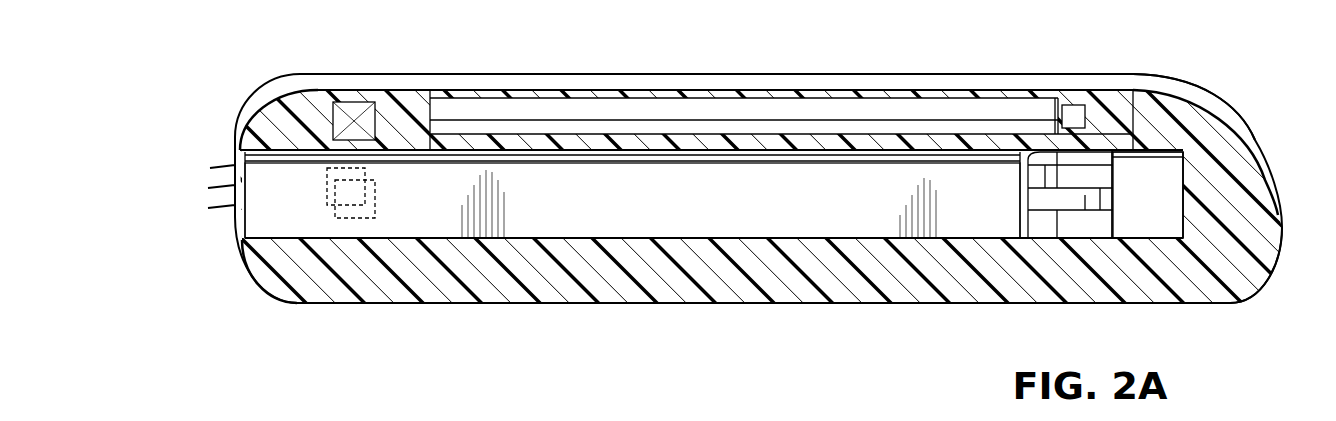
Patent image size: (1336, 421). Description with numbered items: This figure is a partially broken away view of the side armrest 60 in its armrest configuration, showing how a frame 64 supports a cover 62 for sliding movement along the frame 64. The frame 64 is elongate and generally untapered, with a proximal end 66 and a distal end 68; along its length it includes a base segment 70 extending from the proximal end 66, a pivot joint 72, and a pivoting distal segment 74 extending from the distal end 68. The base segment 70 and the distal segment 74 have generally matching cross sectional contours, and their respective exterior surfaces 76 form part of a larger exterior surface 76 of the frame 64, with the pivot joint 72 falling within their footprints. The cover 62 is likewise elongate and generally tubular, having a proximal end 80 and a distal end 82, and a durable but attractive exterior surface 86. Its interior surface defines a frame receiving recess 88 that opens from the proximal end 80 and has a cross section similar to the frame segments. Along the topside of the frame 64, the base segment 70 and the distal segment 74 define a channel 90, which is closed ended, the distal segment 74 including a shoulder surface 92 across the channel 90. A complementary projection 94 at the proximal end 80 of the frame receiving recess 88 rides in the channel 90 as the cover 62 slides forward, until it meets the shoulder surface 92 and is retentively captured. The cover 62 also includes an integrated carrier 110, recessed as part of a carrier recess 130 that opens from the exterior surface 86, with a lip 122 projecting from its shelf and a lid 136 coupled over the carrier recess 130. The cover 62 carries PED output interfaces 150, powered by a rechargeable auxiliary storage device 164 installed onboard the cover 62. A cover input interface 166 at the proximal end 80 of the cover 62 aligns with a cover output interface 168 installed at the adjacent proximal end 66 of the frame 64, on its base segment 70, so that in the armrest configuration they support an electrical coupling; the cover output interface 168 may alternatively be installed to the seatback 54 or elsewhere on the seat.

The seatback 54 is at (223, 160).
The side armrest 60 is at (1216, 100).
The cover 62 is at (1250, 140).
The frame 64 is at (632, 240).
The proximal end 66 is at (240, 228).
The distal end 68 is at (1192, 212).
The base segment 70 is at (787, 230).
The pivot joint 72 is at (1057, 205).
The distal segment 74 is at (1157, 225).
The exterior surface 76 is at (714, 195).
The proximal end 80 is at (252, 104).
The distal end 82 is at (1264, 168).
The exterior surface 86 is at (725, 77).
The frame receiving recess 88 is at (870, 235).
The channel 90 is at (1114, 154).
The shoulder surface 92 is at (1158, 148).
The projection 94 is at (257, 152).
The carrier 110 is at (487, 114).
The lip 122 is at (560, 126).
The carrier recess 130 is at (641, 124).
The lid 136 is at (862, 80).
The PED output interface 150 is at (1082, 105).
The auxiliary storage device 164 is at (355, 103).
The cover input interface 166 is at (377, 206).
The cover output interface 168 is at (368, 172).